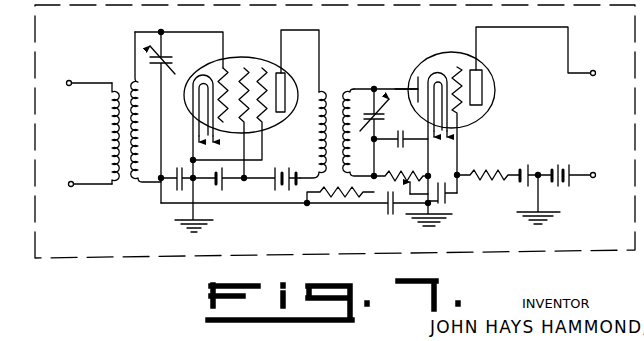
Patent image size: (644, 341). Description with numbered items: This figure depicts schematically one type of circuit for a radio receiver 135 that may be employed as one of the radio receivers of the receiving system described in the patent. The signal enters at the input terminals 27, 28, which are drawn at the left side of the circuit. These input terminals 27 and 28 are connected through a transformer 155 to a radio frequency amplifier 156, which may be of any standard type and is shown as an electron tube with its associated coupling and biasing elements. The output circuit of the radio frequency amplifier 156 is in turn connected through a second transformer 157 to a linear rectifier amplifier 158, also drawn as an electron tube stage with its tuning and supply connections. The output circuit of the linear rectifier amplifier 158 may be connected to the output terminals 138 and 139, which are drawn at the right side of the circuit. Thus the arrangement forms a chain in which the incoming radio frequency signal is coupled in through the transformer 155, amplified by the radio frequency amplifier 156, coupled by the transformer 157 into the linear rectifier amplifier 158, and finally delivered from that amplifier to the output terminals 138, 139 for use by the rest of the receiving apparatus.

The input terminal 27 is at (69, 185).
The input terminal 28 is at (66, 83).
The radio receiver 135 is at (150, 255).
The transformer 155 is at (126, 177).
The radio frequency amplifier 156 is at (268, 50).
The transformer 157 is at (337, 98).
The linear rectifier amplifier 158 is at (524, 141).
The output terminal 138 is at (594, 172).
The output terminal 139 is at (593, 76).